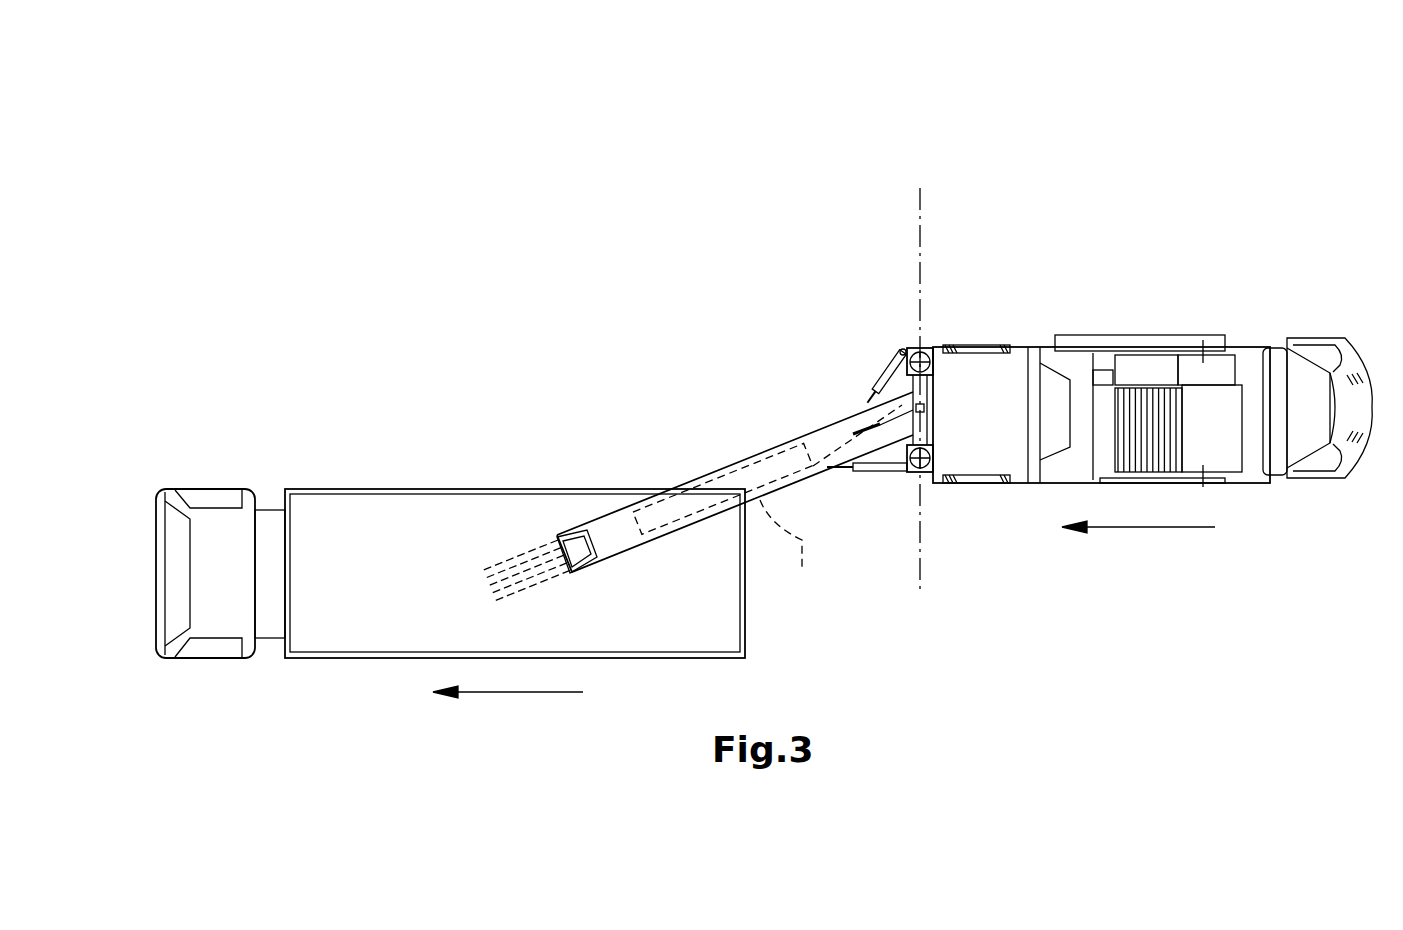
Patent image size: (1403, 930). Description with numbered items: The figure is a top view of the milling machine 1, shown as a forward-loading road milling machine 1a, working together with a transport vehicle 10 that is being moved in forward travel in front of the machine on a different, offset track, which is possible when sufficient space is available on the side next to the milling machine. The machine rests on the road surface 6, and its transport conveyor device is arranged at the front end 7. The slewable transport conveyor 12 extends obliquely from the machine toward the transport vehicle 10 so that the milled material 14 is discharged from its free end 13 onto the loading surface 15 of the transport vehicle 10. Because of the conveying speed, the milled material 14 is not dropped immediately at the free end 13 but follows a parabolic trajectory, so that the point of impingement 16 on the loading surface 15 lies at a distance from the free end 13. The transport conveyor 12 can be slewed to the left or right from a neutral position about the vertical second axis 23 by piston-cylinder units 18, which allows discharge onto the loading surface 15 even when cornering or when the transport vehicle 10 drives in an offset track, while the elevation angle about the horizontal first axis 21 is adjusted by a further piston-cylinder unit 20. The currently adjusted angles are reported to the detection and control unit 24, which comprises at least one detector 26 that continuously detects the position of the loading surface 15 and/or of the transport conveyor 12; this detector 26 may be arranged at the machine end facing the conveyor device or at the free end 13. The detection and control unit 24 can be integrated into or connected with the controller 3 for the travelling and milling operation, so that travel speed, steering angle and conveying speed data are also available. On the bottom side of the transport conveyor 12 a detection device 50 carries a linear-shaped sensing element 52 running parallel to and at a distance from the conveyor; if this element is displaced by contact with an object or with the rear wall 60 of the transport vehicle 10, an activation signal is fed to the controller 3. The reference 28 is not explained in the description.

The milling machine 1 is at (1173, 320).
The forward-loading road milling machine 1a is at (1001, 419).
The controller 3 is at (1098, 377).
The road surface 6 is at (802, 403).
The front end 7 is at (931, 316).
The transport vehicle 10 is at (433, 438).
The transport conveyor 12 is at (755, 452).
The free end 13 is at (587, 573).
The milled material 14 is at (535, 560).
The loading surface 15 is at (684, 608).
The point of impingement 16 is at (462, 592).
The piston-cylinder units 18 is at (900, 352).
The piston-cylinder unit 20 is at (865, 425).
The horizontal first axis 21 is at (920, 258).
The vertical second axis 23 is at (933, 408).
The detection and control unit 24 is at (1100, 348).
The detector 26 is at (547, 443).
The discharge flap 28 is at (580, 545).
The detection device 50 is at (658, 478).
The sensing element 52 is at (797, 548).
The rear wall 60 is at (745, 617).